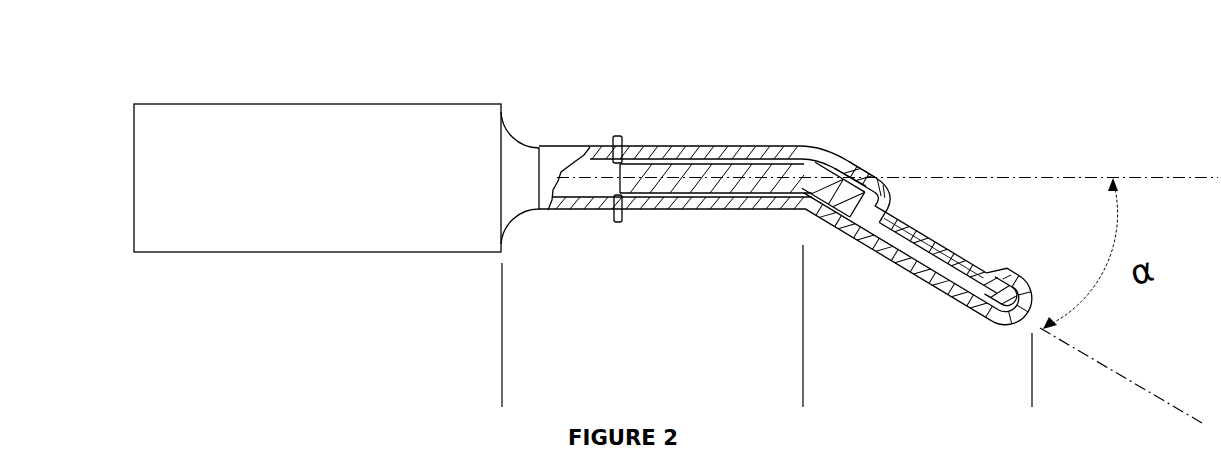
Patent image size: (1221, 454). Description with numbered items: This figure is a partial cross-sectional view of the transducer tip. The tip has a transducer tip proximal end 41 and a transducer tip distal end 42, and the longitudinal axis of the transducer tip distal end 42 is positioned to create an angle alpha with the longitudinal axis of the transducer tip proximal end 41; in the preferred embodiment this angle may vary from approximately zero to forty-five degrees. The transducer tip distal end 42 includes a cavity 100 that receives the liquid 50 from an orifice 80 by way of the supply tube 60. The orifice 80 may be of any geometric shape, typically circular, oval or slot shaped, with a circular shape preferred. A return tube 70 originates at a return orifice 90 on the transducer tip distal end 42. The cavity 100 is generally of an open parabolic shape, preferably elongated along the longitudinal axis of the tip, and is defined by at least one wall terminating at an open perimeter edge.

The transducer tip proximal end 41 is at (803, 380).
The transducer tip distal end 42 is at (803, 380).
The liquid 50 is at (618, 284).
The supply tube 60 is at (750, 155).
The return tube 70 is at (717, 196).
The orifice 80 is at (858, 185).
The return orifice 90 is at (1003, 260).
The cavity 100 is at (922, 243).